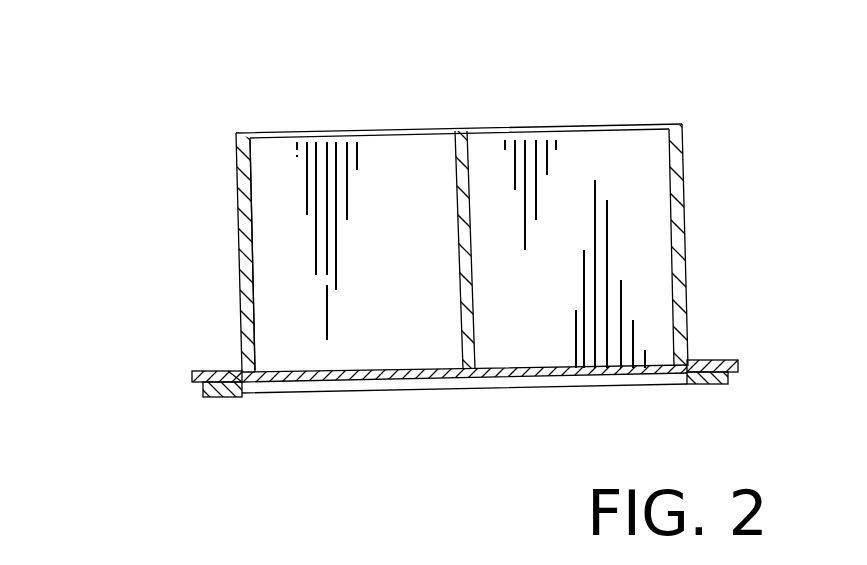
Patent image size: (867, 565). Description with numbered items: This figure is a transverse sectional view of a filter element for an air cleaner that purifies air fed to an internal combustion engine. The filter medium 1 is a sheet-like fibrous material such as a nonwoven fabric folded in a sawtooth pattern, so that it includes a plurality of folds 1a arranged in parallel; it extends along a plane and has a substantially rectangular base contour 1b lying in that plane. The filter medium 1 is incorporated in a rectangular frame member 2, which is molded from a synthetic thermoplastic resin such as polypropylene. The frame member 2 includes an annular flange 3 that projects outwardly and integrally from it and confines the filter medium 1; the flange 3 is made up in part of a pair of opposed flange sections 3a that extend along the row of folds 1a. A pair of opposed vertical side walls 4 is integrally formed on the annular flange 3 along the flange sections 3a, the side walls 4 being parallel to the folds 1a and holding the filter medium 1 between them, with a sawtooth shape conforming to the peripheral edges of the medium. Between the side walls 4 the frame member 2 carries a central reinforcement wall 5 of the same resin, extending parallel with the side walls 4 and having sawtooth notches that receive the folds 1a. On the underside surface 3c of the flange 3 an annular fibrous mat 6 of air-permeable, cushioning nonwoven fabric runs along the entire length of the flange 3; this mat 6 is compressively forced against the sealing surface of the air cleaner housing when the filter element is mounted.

The filter medium 1 is at (407, 381).
The folds 1a is at (380, 188).
The base contour 1b is at (259, 227).
The frame member 2 is at (686, 118).
The annular flange 3 is at (712, 351).
The flange sections 3a is at (205, 371).
The underside surface 3c is at (230, 372).
The vertical side walls 4 is at (238, 216).
The central reinforcement wall 5 is at (465, 197).
The annular fibrous mat 6 is at (208, 397).